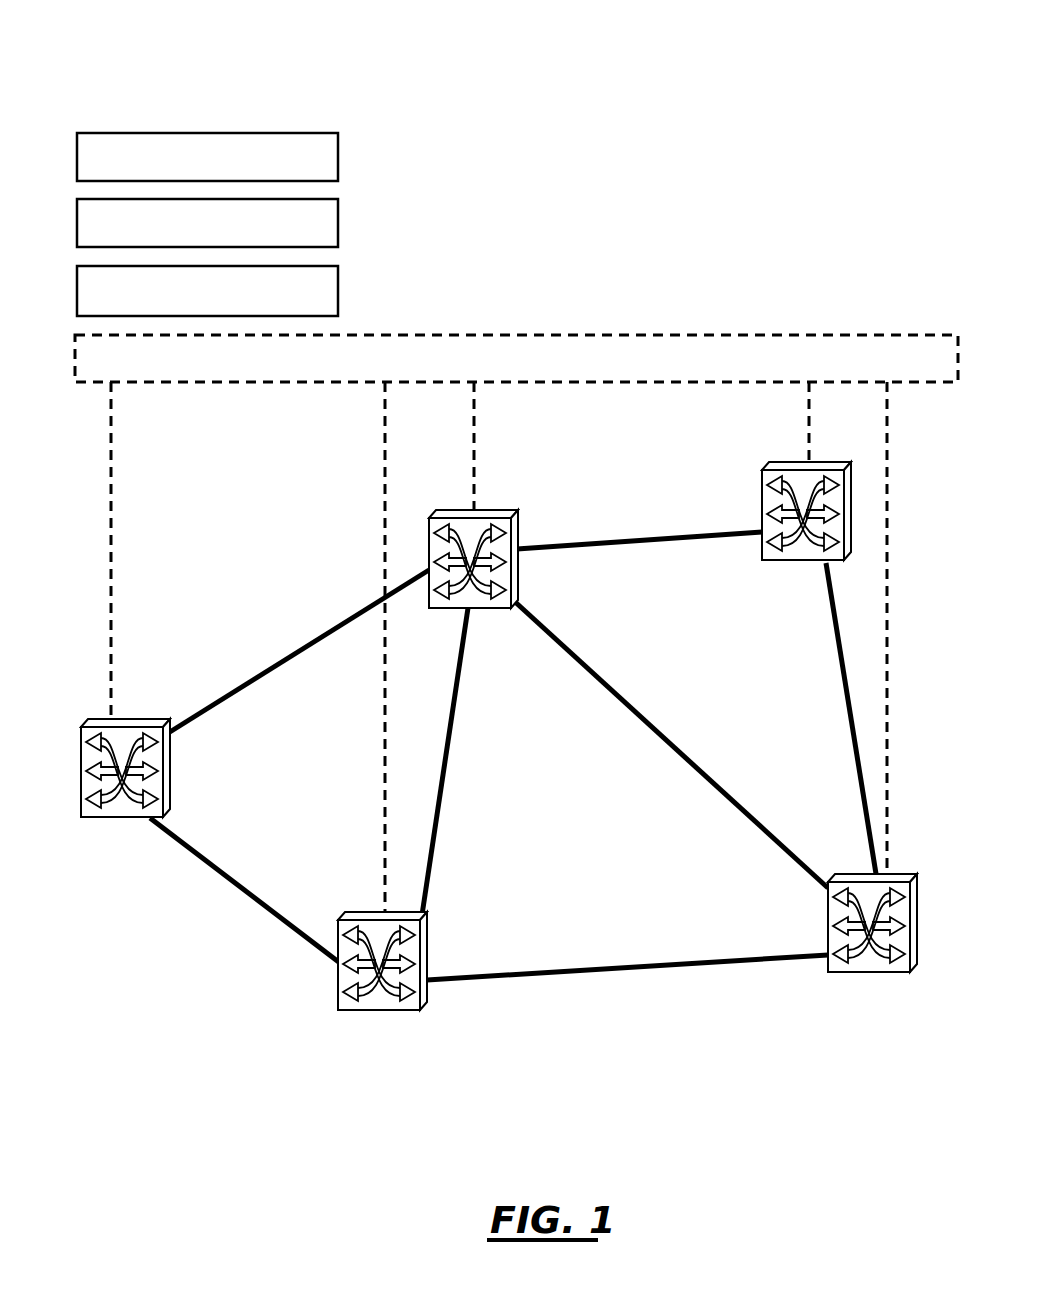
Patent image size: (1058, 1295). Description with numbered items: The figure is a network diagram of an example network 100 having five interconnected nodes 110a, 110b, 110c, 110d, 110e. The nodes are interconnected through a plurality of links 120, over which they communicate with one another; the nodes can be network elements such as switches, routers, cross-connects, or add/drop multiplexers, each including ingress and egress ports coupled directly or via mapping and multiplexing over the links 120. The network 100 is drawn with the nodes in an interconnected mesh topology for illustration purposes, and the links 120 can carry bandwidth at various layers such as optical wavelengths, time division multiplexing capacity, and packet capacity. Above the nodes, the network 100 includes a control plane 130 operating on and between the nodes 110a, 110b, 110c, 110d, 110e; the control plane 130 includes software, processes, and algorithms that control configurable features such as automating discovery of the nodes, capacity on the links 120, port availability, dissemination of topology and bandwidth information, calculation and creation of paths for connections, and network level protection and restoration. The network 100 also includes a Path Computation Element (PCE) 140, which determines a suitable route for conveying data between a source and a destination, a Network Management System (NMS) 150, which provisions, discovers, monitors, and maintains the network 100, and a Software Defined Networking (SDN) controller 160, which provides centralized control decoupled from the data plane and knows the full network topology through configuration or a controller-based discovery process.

The network 100 is at (602, 58).
The node 110a is at (83, 818).
The node 110b is at (508, 510).
The node 110c is at (800, 563).
The node 110d is at (870, 973).
The node 110e is at (370, 1013).
The links 120 is at (620, 538).
The control plane 130 is at (685, 334).
The Path Computation Element (PCE) 140 is at (340, 298).
The Network Management System (NMS) 150 is at (340, 229).
The Software Defined Networking (SDN) controller 160 is at (340, 162).